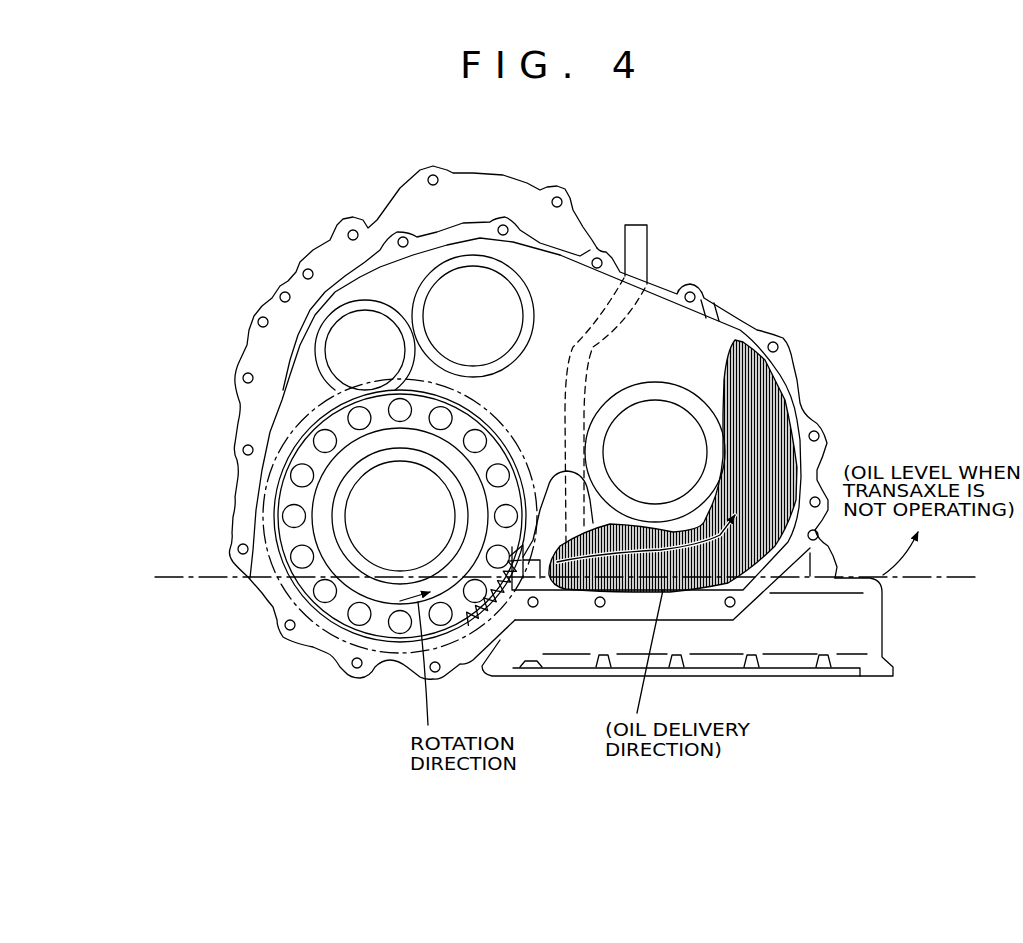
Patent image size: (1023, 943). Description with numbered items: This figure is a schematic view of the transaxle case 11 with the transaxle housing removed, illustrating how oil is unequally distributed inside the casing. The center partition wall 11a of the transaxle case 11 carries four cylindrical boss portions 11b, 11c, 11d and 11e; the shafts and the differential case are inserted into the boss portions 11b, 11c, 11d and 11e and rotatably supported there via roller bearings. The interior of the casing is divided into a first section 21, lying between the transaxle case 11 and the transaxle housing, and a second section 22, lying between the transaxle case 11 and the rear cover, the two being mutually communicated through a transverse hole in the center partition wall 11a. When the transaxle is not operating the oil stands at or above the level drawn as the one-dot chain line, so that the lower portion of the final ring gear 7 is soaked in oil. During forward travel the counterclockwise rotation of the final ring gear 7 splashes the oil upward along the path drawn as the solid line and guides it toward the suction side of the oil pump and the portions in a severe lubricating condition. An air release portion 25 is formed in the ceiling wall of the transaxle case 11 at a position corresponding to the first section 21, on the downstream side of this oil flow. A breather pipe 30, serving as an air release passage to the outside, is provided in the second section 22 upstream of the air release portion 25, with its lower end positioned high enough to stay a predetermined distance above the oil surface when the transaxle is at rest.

The transaxle case 11 is at (330, 238).
The center partition wall 11a is at (558, 293).
The boss portion 11b is at (653, 393).
The boss portion 11c is at (470, 263).
The boss portion 11d is at (340, 323).
The boss portion 11e is at (340, 553).
The final ring gear 7 is at (380, 628).
The first section 21 is at (777, 392).
The second section 22 is at (530, 533).
The air release portion 25 is at (715, 300).
The breather pipe 30 is at (647, 243).